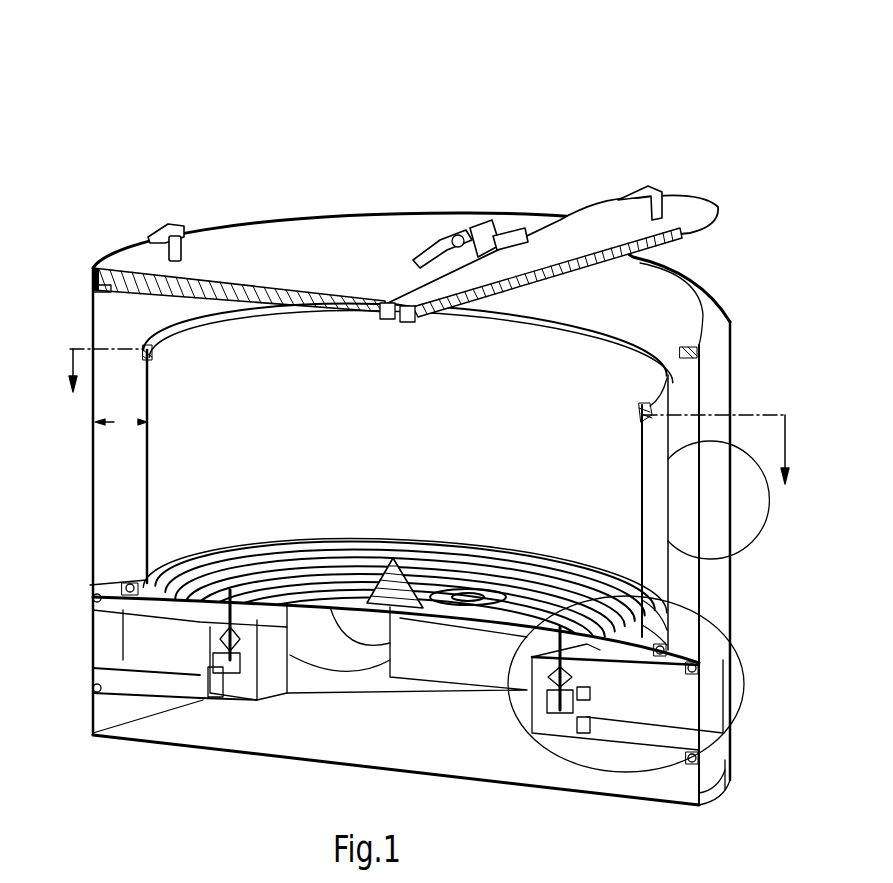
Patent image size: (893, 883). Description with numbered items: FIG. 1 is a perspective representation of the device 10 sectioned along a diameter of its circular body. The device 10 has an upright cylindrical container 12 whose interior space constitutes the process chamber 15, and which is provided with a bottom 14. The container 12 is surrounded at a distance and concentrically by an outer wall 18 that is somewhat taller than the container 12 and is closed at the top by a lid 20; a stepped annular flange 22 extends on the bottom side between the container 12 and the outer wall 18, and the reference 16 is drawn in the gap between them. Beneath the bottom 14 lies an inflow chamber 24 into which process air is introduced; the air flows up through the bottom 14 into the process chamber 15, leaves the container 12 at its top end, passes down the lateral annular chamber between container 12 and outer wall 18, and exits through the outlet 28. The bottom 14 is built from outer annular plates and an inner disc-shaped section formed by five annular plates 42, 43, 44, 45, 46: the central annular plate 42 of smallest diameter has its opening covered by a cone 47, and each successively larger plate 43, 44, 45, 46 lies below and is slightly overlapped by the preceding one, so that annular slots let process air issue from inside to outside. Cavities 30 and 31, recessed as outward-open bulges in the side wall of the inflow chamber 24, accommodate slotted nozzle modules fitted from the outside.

The device 10 is at (541, 138).
The cylindrical container 12 is at (146, 476).
The bottom 14 is at (137, 580).
The process chamber 15 is at (408, 434).
The gap between housing and inner vessel 16 is at (121, 420).
The outer wall 18 is at (93, 310).
The lid 20 is at (331, 243).
The stepped annular flange 22 is at (107, 577).
The inflow chamber 24 is at (443, 738).
The outlet 28 is at (748, 527).
The cavity 30 is at (688, 693).
The cavity 31 is at (163, 645).
The central annular plate 42 is at (430, 570).
The annular plate 43 is at (463, 578).
The annular plate 44 is at (493, 588).
The annular plate 45 is at (520, 599).
The annular plate 46 is at (552, 612).
The cone 47 is at (370, 560).